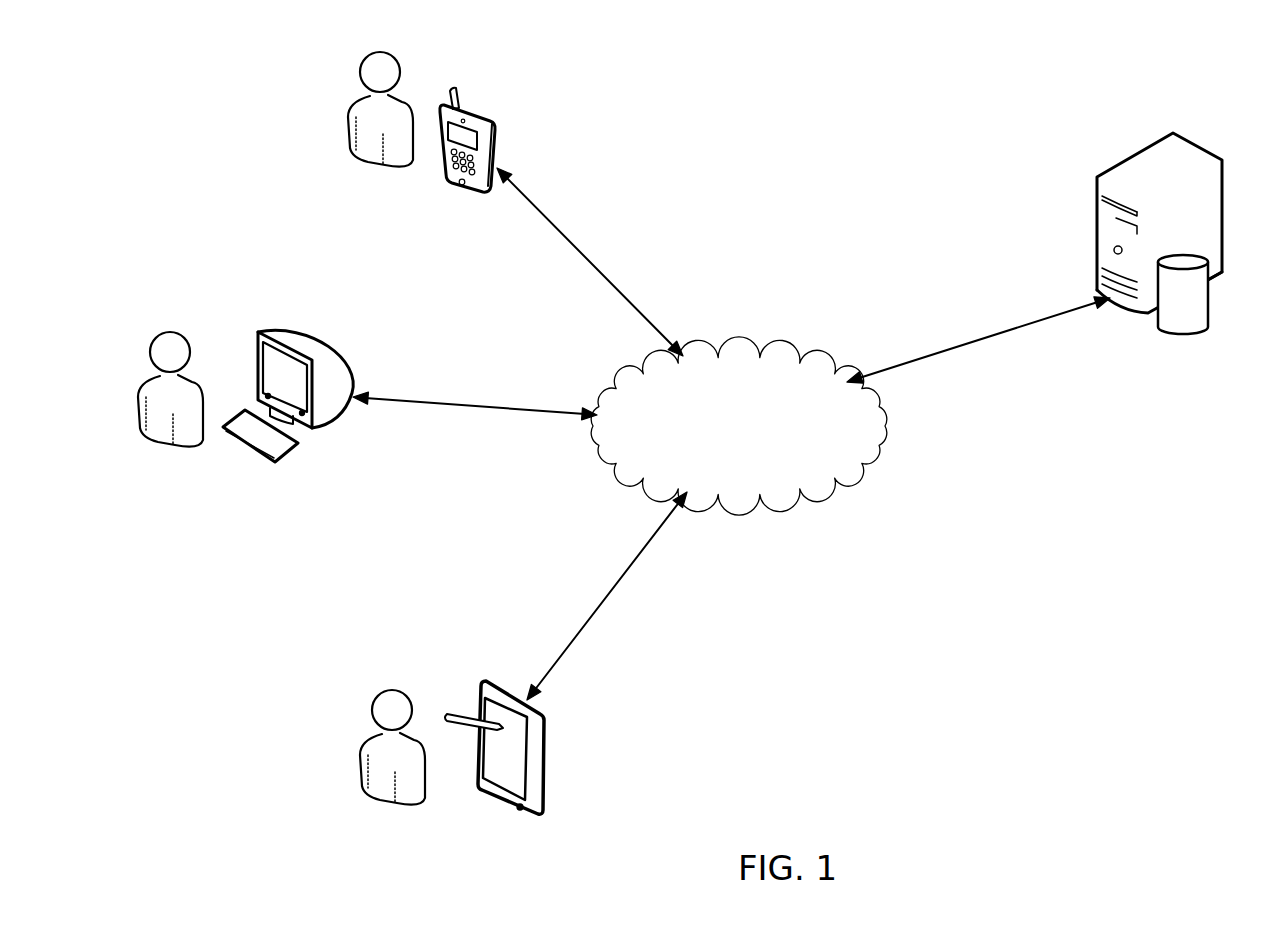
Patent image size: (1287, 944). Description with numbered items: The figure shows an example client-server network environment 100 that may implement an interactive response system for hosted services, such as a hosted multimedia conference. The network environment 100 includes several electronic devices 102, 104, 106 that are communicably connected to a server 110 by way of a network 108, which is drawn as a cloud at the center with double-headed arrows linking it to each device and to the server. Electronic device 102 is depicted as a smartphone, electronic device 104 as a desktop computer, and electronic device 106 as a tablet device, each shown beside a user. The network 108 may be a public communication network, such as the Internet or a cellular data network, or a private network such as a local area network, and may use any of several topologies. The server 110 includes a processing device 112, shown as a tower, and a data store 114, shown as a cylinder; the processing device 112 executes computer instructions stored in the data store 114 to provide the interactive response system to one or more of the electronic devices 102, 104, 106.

The network environment 100 is at (866, 98).
The electronic device 102 is at (478, 113).
The electronic device 104 is at (315, 342).
The electronic device 106 is at (487, 682).
The network 108 is at (738, 355).
The server 110 is at (1095, 338).
The processing device 112 is at (1197, 143).
The data store 114 is at (1210, 312).